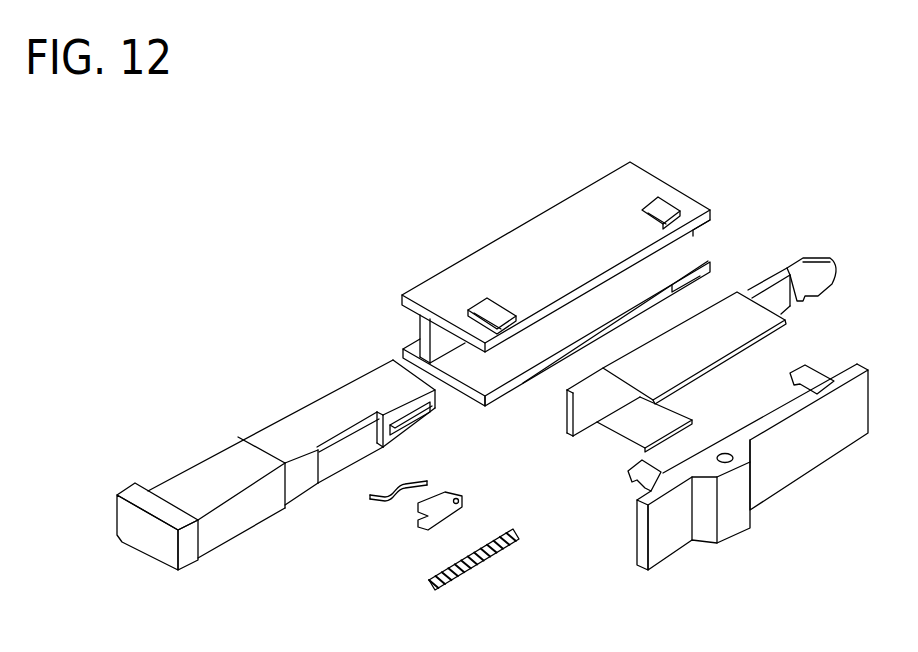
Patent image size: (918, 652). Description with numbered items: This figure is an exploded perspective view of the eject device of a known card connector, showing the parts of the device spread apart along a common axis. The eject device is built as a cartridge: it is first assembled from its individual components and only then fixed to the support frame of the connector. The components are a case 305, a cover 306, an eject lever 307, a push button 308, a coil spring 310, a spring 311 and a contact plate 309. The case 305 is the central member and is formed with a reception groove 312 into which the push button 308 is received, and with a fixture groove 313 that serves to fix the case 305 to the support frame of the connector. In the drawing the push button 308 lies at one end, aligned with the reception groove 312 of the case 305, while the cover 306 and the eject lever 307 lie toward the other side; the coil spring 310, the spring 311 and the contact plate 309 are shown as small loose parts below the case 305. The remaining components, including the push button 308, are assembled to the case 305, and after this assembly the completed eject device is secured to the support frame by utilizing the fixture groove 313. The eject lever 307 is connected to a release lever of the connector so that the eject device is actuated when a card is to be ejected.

The case 305 is at (525, 216).
The cover 306 is at (670, 545).
The eject lever 307 is at (770, 277).
The push button 308 is at (278, 410).
The contact plate 309 is at (427, 535).
The coil spring 310 is at (500, 558).
The spring 311 is at (390, 506).
The reception groove 312 is at (495, 372).
The fixture groove 313 is at (418, 346).